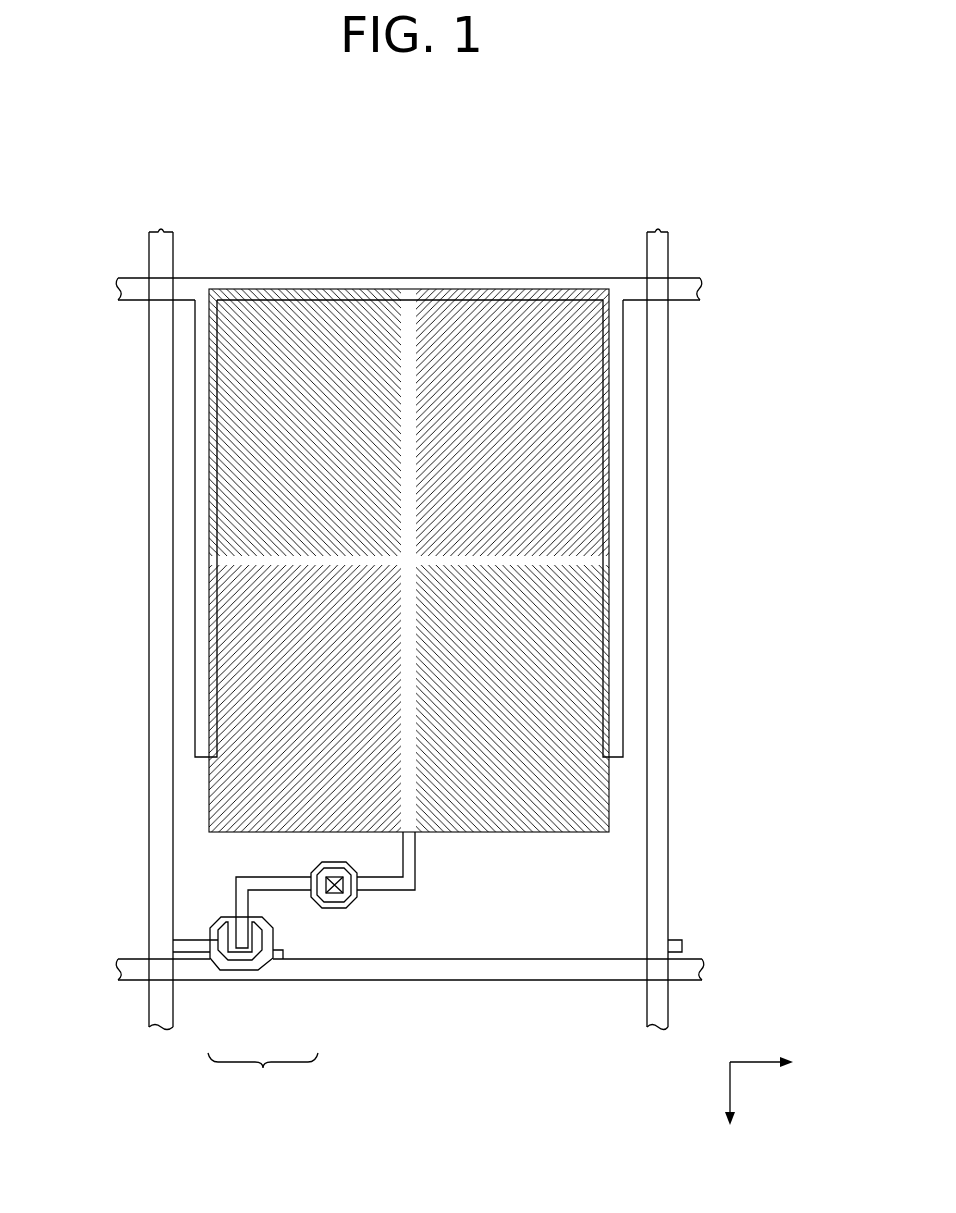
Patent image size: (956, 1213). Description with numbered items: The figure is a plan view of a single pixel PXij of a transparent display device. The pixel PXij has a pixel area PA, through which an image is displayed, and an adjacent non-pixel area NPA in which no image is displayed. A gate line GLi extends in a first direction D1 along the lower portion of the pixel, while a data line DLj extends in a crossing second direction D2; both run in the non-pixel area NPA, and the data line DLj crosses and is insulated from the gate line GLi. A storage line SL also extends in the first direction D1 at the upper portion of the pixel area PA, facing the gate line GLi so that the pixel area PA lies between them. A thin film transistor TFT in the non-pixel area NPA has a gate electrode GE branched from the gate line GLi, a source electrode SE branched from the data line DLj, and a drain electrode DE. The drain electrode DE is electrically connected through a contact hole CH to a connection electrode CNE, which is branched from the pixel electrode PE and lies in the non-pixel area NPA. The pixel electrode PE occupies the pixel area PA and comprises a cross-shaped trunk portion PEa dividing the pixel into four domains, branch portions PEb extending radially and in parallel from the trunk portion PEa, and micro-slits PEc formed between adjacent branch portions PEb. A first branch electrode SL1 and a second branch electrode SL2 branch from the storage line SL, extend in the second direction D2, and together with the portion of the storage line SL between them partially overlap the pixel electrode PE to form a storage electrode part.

The pixel PXij is at (290, 193).
The data line DLj is at (161, 230).
The storage line SL is at (118, 288).
The first branch electrode SL1 is at (195, 425).
The second branch electrode SL2 is at (623, 425).
The pixel electrode PE is at (609, 488).
The trunk portion PEa is at (588, 563).
The branch portions PEb is at (590, 593).
The micro-slits PEc is at (580, 623).
The pixel area PA is at (612, 793).
The non-pixel area NPA is at (612, 897).
The gate line GLi is at (118, 968).
The drain electrode DE is at (222, 945).
The source electrode SE is at (242, 965).
The gate electrode GE is at (273, 938).
The contact hole CH is at (337, 893).
The connection electrode CNE is at (415, 862).
The thin film transistor TFT is at (263, 1075).
The first direction D1 is at (775, 1063).
The second direction D2 is at (729, 1108).